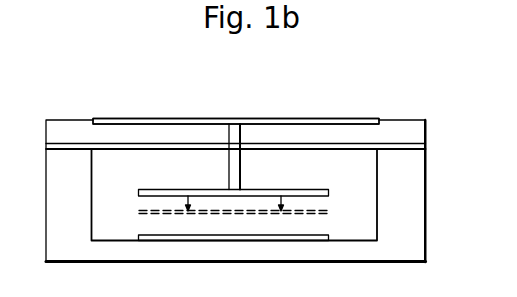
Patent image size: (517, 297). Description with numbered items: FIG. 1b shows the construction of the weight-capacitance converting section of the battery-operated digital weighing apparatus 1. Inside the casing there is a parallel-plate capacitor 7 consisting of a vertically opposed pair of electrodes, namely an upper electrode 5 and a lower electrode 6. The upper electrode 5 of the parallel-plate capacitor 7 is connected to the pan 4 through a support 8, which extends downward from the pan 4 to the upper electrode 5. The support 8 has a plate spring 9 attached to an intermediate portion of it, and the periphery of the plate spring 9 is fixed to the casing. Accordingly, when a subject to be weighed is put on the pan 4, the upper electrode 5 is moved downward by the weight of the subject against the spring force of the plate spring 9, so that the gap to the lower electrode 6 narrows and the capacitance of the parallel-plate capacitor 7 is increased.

The digital weighing apparatus 1 is at (145, 111).
The pan 4 is at (333, 121).
The upper electrode 5 is at (328, 193).
The lower electrode 6 is at (328, 236).
The parallel-plate capacitor 7 is at (287, 190).
The support 8 is at (233, 137).
The plate spring 9 is at (370, 143).